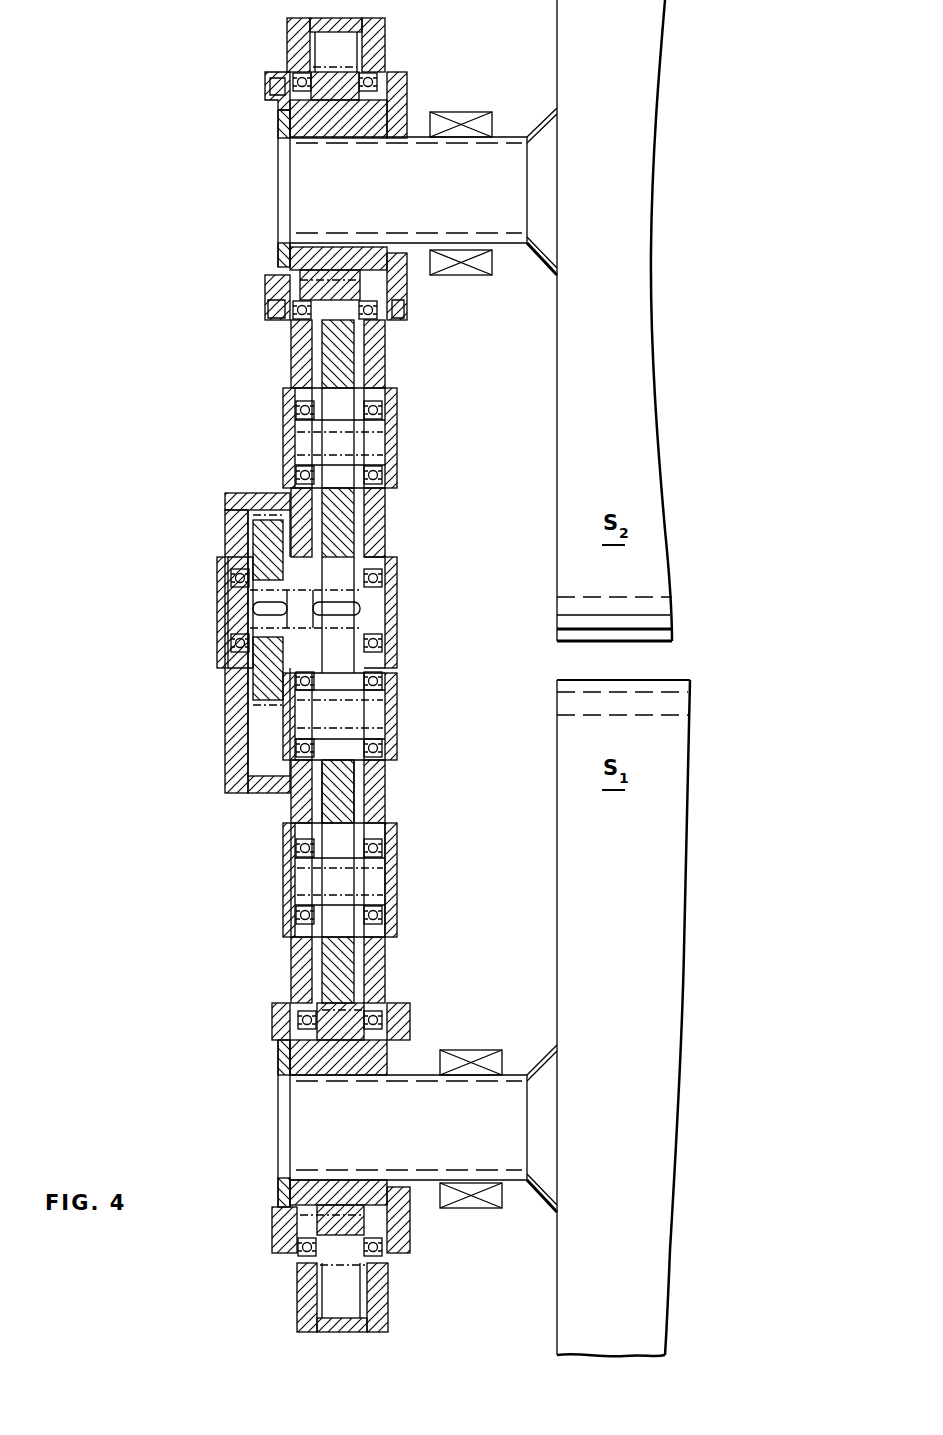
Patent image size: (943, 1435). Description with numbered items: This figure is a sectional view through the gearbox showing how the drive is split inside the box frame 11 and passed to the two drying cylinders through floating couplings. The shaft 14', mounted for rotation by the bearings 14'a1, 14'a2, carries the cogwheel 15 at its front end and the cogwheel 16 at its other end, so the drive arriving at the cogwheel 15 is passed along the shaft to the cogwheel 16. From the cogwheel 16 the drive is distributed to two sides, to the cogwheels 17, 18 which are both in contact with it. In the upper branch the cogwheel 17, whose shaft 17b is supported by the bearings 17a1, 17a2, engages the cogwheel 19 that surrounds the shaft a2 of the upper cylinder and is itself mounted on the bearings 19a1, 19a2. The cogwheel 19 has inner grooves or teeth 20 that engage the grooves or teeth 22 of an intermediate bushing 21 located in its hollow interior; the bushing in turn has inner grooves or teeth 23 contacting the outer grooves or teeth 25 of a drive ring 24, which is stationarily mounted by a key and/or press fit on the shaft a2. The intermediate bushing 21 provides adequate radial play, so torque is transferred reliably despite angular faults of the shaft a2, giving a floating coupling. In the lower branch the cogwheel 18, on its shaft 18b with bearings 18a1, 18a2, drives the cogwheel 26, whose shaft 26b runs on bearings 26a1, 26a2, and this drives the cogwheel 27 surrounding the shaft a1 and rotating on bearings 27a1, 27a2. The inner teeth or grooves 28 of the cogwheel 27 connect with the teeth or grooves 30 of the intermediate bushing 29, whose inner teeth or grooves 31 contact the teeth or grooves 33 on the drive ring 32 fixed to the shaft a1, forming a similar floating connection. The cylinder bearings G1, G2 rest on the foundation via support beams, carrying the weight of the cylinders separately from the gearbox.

The box frame 11 is at (245, 947).
The shaft 14' is at (276, 612).
The bearing 14'a1 is at (199, 590).
The bearing 14'a2 is at (424, 617).
The cogwheel 15 is at (268, 678).
The cogwheel 16 is at (345, 565).
The cogwheel 17 is at (345, 510).
The bearing 17a1 is at (283, 410).
The bearing 17a2 is at (395, 411).
The shaft 17b is at (340, 436).
The cogwheel 18 is at (352, 762).
The bearing 18a1 is at (300, 742).
The bearing 18a2 is at (382, 680).
The shaft 18b is at (340, 712).
The cogwheel 19 is at (272, 302).
The bearing 19a1 is at (284, 326).
The bearing 19a2 is at (372, 328).
The inner grooves or teeth 20 is at (400, 312).
The intermediate bushing 21 is at (352, 283).
The grooves or teeth 22 is at (395, 270).
The inner grooves or teeth 23 is at (288, 258).
The drive ring 24 is at (392, 120).
The outer grooves or teeth 25 is at (275, 283).
The cogwheel 26 is at (345, 805).
The bearing 26a1 is at (283, 845).
The bearing 26a2 is at (396, 843).
The shaft 26b is at (340, 873).
The cogwheel 27 is at (295, 1005).
The bearing 27a1 is at (275, 1022).
The bearing 27a2 is at (395, 1003).
The inner teeth or grooves 28 is at (400, 1242).
The intermediate bushing 29 is at (352, 1252).
The teeth or grooves 30 is at (396, 1205).
The inner teeth or grooves 31 is at (270, 1218).
The drive ring 32 is at (345, 1193).
The teeth or grooves 33 is at (290, 1172).
The shaft a1 is at (461, 1150).
The shaft a2 is at (462, 213).
The bearing G1 is at (470, 1056).
The bearing G2 is at (468, 116).